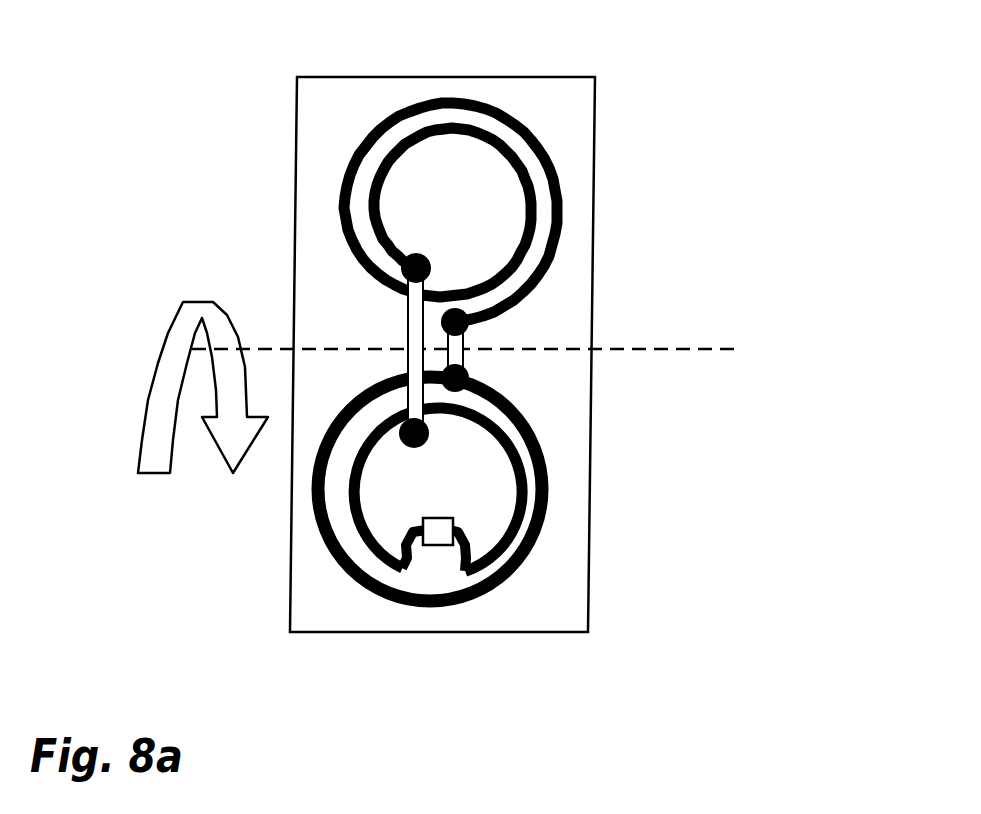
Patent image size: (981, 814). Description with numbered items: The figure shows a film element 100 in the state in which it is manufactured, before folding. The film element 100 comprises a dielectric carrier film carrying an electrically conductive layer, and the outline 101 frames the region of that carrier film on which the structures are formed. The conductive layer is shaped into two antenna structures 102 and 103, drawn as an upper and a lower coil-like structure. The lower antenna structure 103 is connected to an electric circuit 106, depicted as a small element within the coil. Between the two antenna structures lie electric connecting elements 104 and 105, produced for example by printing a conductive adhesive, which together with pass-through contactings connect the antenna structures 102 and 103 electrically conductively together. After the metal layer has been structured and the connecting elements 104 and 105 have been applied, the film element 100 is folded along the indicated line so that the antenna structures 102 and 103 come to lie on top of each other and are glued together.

The film element 100 is at (436, 345).
The substrate 101 is at (297, 80).
The antenna structure 102 is at (338, 213).
The antenna structure 103 is at (316, 517).
The electric connecting element 104 is at (405, 318).
The electric connecting element 105 is at (468, 346).
The electric circuit 106 is at (436, 547).